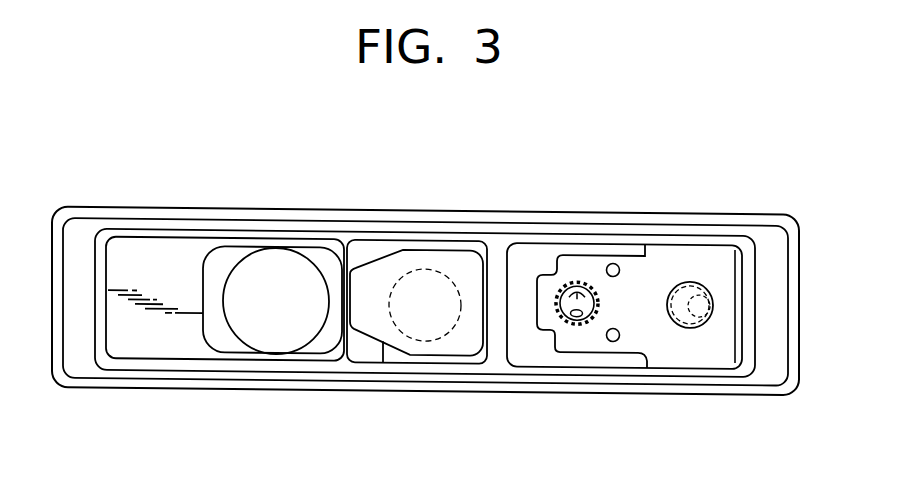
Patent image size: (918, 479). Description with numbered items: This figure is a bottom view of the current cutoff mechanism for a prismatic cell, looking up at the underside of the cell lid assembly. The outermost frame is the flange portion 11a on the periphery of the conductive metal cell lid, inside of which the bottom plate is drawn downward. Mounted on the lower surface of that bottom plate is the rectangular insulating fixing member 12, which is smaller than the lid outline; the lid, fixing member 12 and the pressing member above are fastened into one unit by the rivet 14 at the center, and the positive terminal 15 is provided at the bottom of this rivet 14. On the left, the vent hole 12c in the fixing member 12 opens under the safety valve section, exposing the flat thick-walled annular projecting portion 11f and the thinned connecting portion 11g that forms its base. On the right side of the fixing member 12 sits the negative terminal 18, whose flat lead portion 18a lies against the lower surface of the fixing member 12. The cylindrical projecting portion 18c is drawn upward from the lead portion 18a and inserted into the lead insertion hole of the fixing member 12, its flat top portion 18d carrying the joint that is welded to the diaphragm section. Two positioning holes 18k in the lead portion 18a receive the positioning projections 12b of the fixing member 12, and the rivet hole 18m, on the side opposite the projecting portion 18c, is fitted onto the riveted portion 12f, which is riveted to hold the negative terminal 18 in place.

The flange portion 11a is at (788, 216).
The projecting portion 11f is at (269, 311).
The connecting portion 11g is at (327, 300).
The fixing member 12 is at (769, 277).
The positioning projections 12b is at (614, 257).
The vent hole 12c is at (206, 311).
The riveted portion 12f is at (691, 305).
The rivet 14 is at (382, 270).
The positive terminal 15 is at (352, 256).
The negative terminal 18 is at (713, 254).
The lead portion 18a is at (650, 267).
The projecting portion 18c is at (558, 286).
The top portion 18d is at (582, 276).
The positioning holes 18k is at (620, 264).
The rivet hole 18m is at (706, 310).